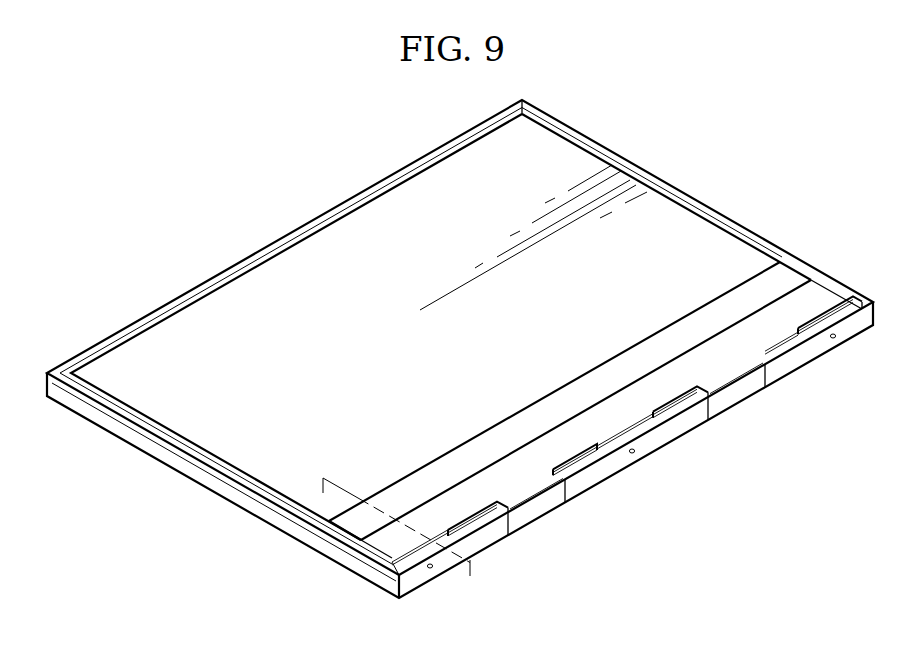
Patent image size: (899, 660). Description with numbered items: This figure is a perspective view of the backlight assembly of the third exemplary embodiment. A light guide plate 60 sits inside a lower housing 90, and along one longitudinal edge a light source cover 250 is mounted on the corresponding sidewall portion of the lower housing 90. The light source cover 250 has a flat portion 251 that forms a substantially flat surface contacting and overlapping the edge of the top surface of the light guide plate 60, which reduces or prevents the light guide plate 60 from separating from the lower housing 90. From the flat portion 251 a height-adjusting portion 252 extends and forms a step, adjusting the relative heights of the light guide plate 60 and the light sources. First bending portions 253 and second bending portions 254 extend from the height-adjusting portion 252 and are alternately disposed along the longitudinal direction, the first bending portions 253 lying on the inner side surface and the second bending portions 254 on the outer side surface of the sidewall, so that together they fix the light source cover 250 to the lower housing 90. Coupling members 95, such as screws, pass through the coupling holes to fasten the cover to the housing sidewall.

The light guide plate 60 is at (247, 298).
The lower housing 90 is at (98, 438).
The coupling member 95 is at (432, 569).
The light source cover 250 is at (339, 569).
The flat portion 251 is at (350, 527).
The height-adjusting portion 252 is at (380, 542).
The first bending portion 253 is at (395, 562).
The second bending portion 254 is at (375, 592).